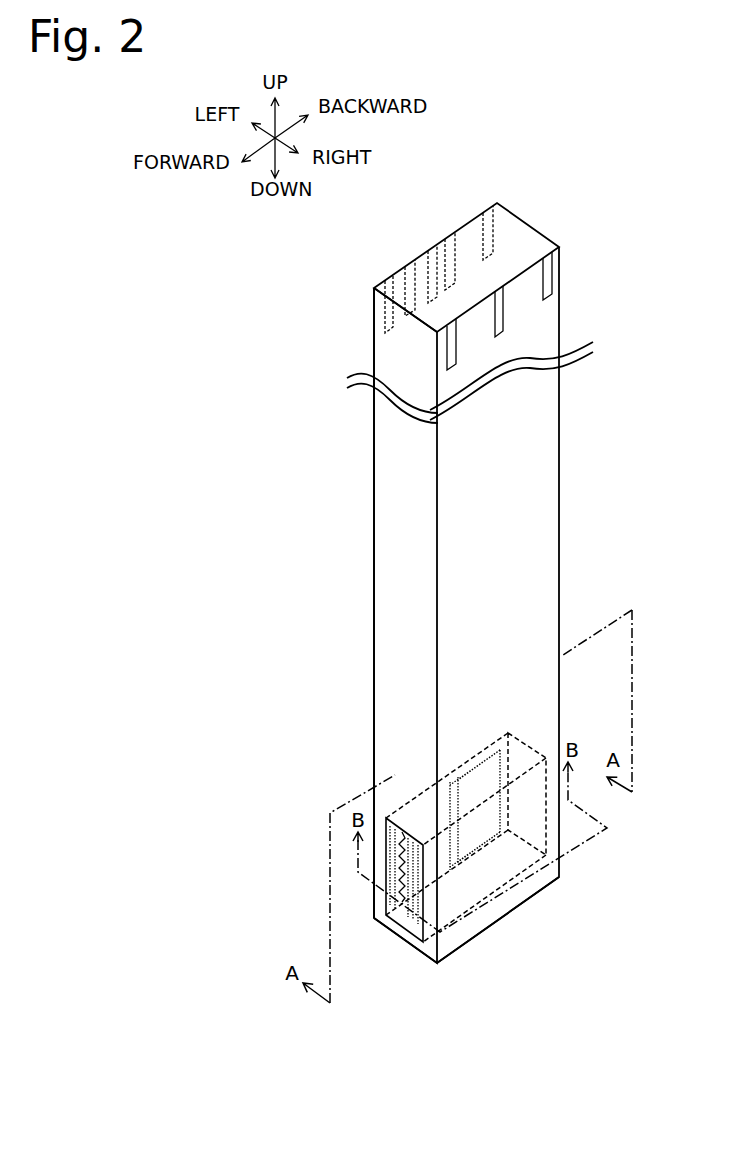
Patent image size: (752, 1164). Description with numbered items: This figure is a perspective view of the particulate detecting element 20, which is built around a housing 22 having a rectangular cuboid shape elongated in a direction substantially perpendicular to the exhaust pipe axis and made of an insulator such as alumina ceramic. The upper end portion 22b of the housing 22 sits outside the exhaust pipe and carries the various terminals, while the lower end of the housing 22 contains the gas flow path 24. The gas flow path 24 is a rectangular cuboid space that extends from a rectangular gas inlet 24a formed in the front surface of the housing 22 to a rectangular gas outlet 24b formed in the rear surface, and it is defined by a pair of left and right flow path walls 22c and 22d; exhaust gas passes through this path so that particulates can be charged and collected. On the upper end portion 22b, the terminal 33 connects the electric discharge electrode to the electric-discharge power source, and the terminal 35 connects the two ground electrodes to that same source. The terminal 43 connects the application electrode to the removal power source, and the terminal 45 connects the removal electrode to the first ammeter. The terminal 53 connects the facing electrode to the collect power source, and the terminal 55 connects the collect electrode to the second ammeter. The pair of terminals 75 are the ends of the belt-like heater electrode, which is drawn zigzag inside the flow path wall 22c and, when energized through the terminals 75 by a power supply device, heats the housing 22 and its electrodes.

The particulate detecting element 20 is at (569, 108).
The housing 22 is at (398, 563).
The upper end portion 22b is at (395, 343).
The left flow path wall 22c is at (380, 852).
The right flow path wall 22d is at (432, 897).
The gas flow path 24 is at (473, 875).
The gas inlet 24a is at (413, 923).
The gas outlet 24b is at (440, 783).
The terminal 33 is at (453, 350).
The terminal 43 is at (497, 313).
The terminal 53 is at (548, 278).
The terminal 35 is at (410, 267).
The terminal 45 is at (430, 248).
The terminal 55 is at (452, 236).
The terminals 75 is at (489, 208).